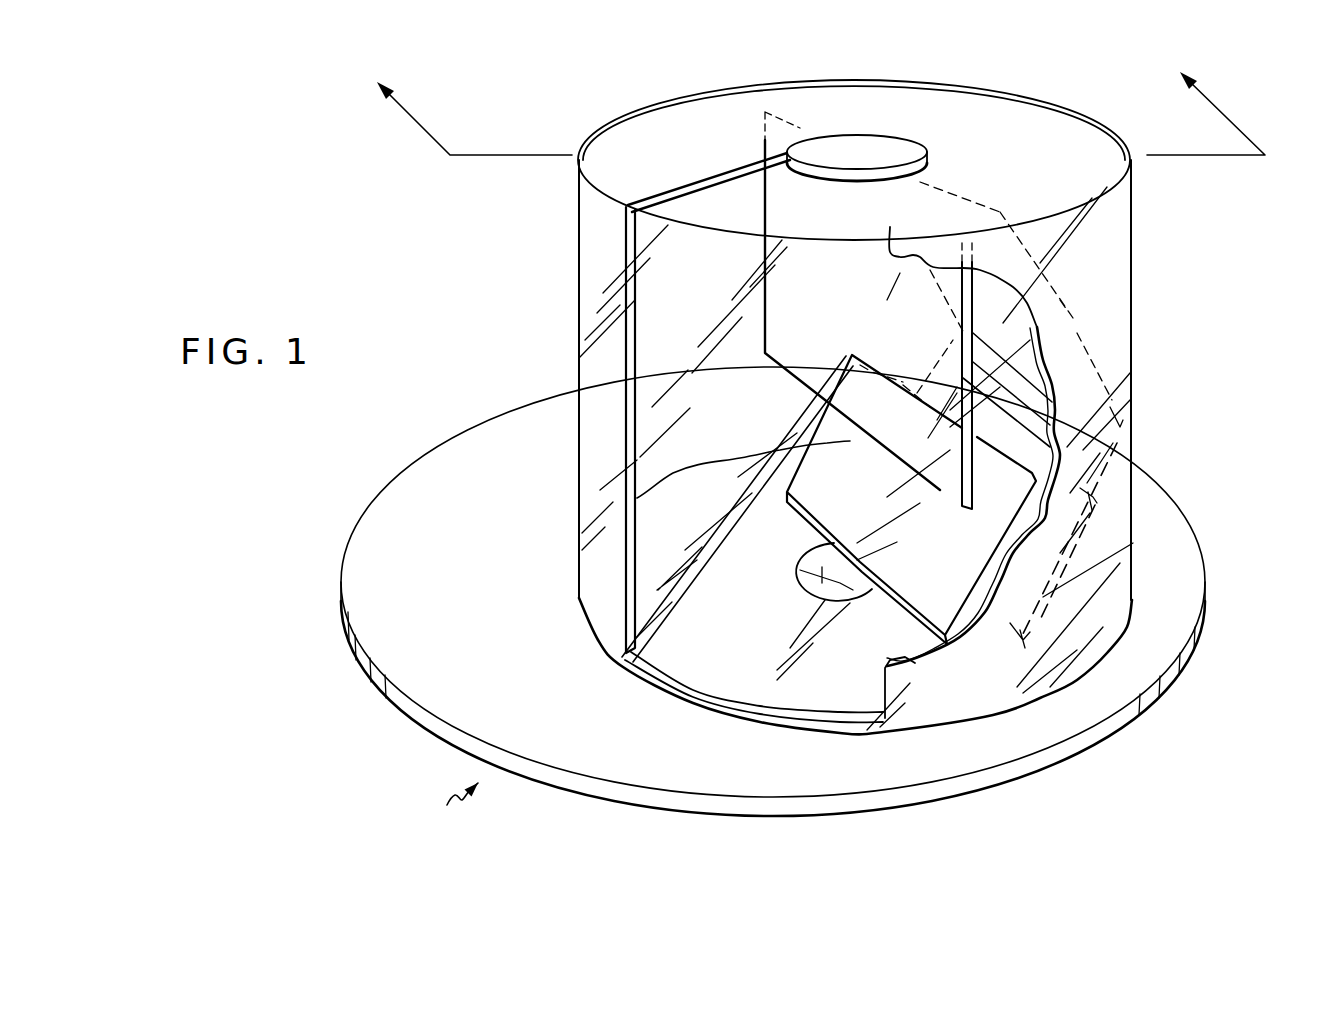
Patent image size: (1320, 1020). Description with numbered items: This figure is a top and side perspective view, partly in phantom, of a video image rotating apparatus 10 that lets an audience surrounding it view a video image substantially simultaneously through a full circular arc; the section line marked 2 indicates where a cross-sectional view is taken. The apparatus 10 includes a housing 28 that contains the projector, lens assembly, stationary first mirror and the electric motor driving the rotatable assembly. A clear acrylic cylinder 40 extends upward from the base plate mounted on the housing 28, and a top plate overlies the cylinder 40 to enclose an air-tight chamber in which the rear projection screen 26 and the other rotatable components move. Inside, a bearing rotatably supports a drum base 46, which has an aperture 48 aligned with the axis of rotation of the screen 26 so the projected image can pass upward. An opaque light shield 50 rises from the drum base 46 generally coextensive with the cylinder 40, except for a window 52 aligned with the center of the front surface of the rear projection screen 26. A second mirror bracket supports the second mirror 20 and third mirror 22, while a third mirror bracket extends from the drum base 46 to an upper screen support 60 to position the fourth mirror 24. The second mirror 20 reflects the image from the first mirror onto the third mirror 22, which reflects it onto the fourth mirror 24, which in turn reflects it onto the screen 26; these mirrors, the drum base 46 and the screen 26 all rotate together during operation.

The section line 2- 2 is at (826, 140).
The video image rotating apparatus 10 is at (445, 811).
The second mirror 20 is at (980, 615).
The third mirror 22 is at (1103, 507).
The fourth mirror 24 is at (1063, 320).
The rear projection screen 26 is at (787, 203).
The housing 28 is at (1123, 693).
The clear acrylic cylinder 40 is at (1133, 358).
The drum base 46 is at (703, 665).
The aperture 48 is at (867, 595).
The opaque light shield 50 is at (630, 385).
The window 52 is at (732, 176).
The upper screen support 60 is at (878, 153).